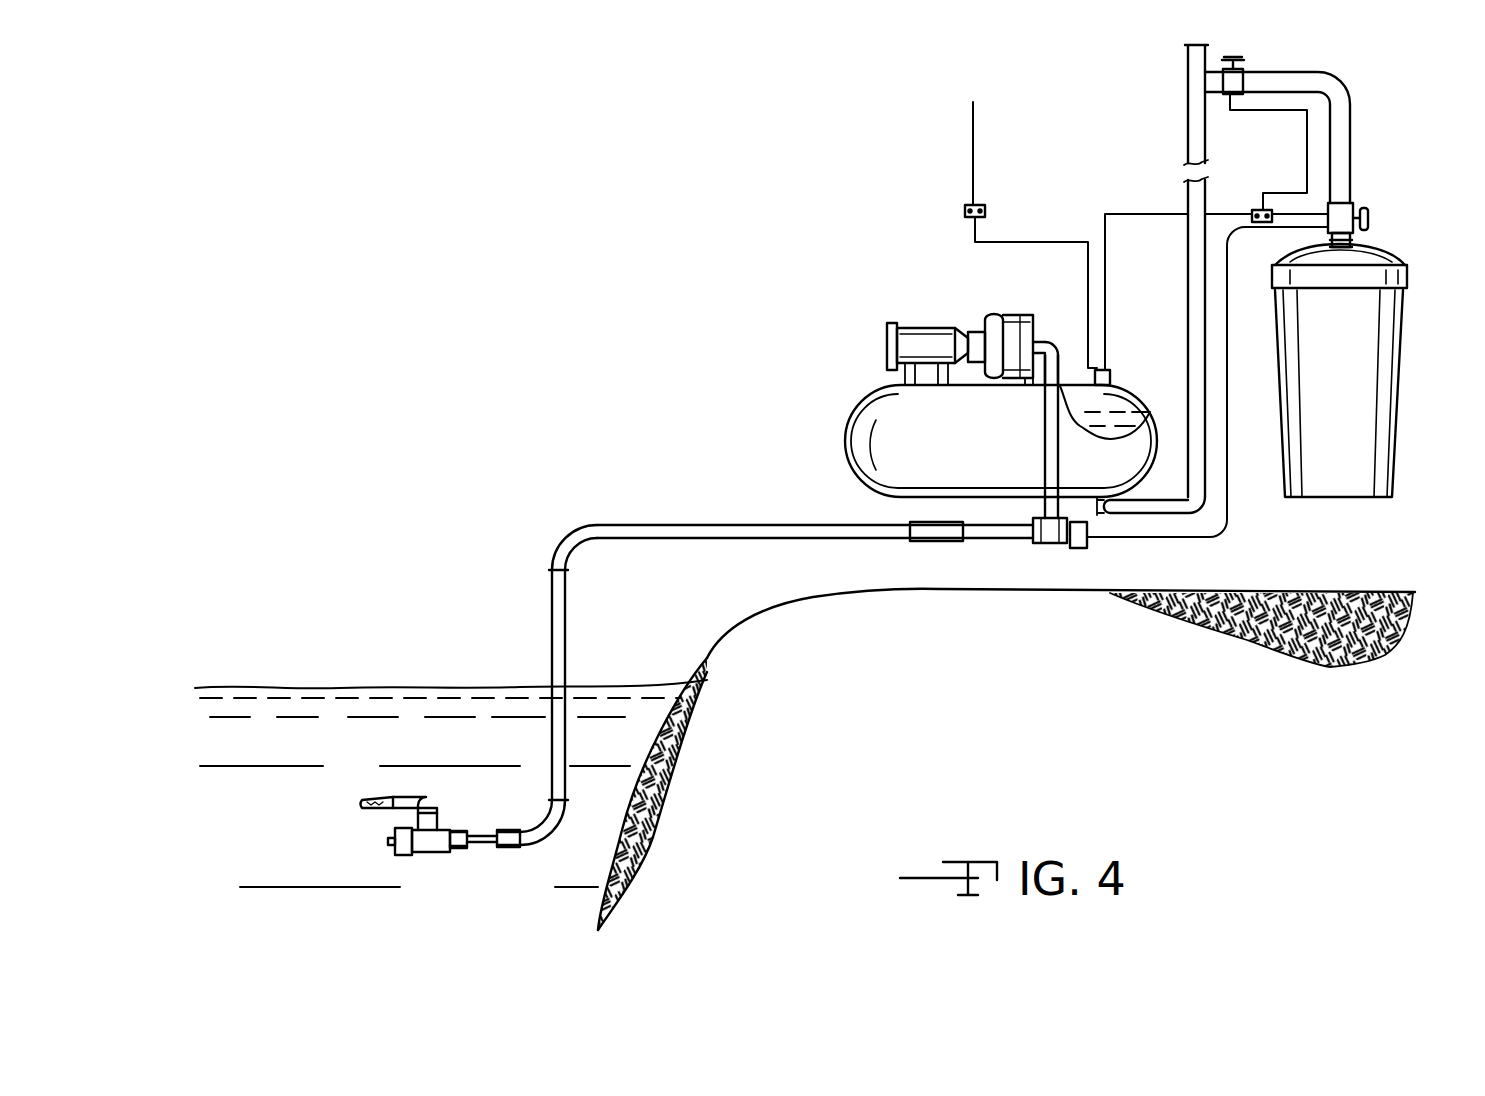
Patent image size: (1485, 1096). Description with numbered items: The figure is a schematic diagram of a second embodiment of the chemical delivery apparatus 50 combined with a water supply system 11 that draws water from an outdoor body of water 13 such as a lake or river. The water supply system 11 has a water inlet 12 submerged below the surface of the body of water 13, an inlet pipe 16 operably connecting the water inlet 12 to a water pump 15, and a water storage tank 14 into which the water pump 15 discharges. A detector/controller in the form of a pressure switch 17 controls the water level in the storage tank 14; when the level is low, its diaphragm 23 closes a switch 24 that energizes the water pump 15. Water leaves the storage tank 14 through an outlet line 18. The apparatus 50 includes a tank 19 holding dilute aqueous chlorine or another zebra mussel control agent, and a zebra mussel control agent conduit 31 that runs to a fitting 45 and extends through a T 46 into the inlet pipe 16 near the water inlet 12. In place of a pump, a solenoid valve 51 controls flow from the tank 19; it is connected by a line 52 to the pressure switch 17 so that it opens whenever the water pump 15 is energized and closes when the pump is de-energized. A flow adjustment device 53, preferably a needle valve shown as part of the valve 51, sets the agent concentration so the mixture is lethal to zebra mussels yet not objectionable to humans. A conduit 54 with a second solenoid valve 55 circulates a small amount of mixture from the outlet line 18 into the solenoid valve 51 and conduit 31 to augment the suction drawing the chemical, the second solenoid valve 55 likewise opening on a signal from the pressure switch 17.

The water supply system 11 is at (772, 452).
The water inlet 12 is at (406, 795).
The outdoor body of water 13 is at (344, 684).
The water storage tank 14 is at (850, 416).
The water pump 15 is at (976, 328).
The inlet pipe 16 is at (758, 524).
The pressure switch 17 is at (1118, 392).
The outlet line 18 is at (1188, 262).
The tank 19 is at (1354, 410).
The diaphragm 23 is at (1076, 372).
The switch 24 is at (1115, 372).
The zebra mussel control agent conduit 31 is at (1214, 538).
The fitting 45 is at (1086, 548).
The T 46 is at (1046, 543).
The apparatus 50 is at (1312, 506).
The solenoid valve 51 is at (1354, 206).
The line 52 is at (1240, 210).
The flow adjustment device 53 is at (1380, 220).
The conduit 54 is at (1348, 82).
The second solenoid valve 55 is at (1244, 72).